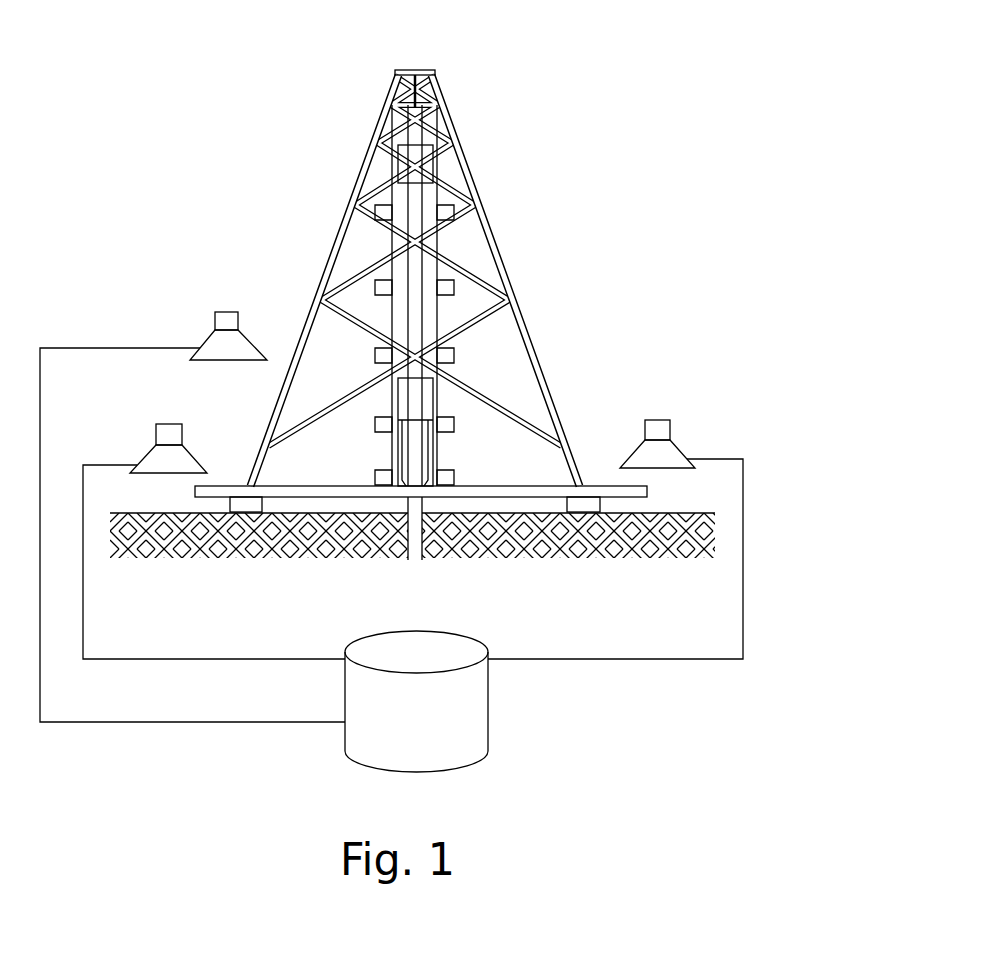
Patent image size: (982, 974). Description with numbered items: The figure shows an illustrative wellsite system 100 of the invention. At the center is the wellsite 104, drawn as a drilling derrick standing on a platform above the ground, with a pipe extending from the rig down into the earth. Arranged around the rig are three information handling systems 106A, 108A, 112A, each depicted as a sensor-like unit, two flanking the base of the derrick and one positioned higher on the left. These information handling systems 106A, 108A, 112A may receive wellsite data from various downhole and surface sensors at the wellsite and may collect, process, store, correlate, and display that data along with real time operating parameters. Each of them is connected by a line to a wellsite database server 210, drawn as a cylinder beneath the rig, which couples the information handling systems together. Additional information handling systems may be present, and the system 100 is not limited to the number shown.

The system 100 is at (553, 53).
The wellsite 104 is at (490, 223).
The information handling system 106A is at (166, 424).
The information handling system 108A is at (657, 420).
The information handling system 112A is at (228, 315).
The wellsite database server 210 is at (462, 635).